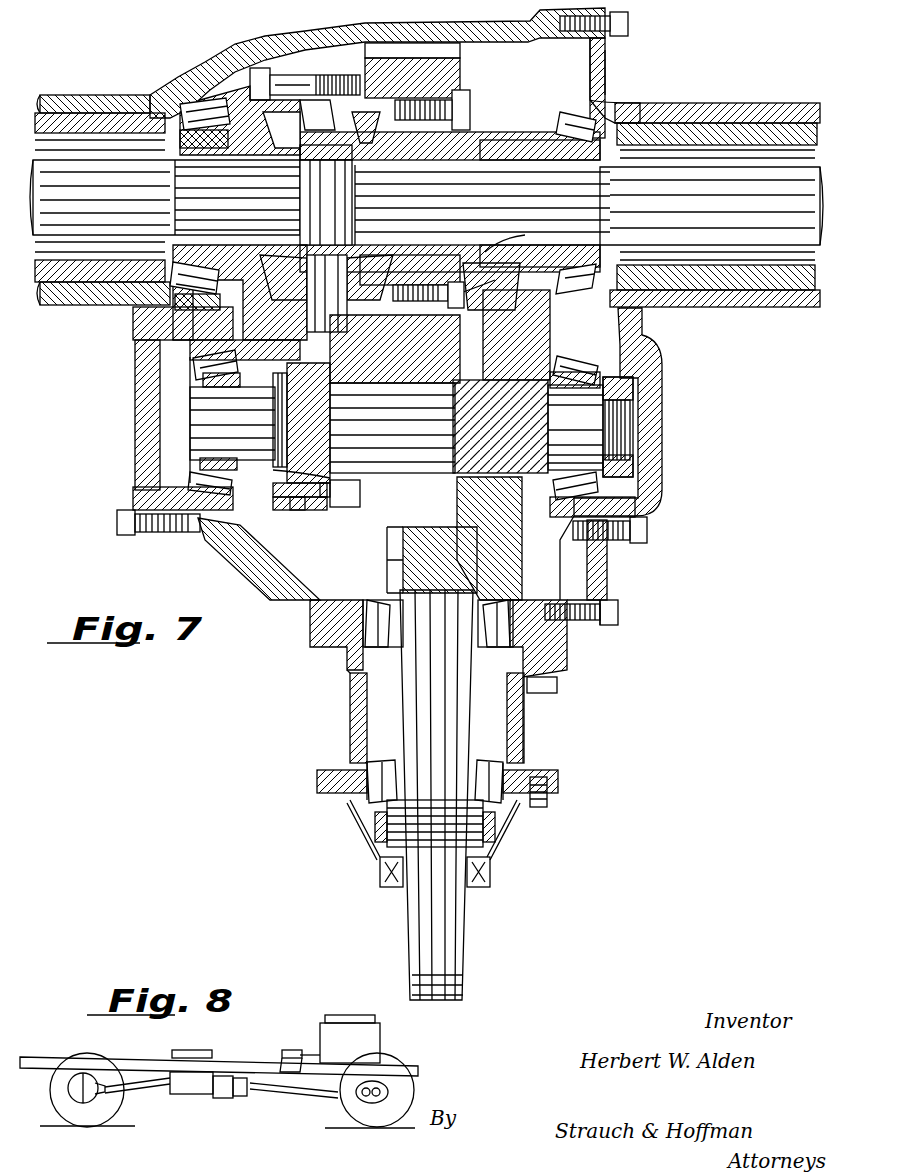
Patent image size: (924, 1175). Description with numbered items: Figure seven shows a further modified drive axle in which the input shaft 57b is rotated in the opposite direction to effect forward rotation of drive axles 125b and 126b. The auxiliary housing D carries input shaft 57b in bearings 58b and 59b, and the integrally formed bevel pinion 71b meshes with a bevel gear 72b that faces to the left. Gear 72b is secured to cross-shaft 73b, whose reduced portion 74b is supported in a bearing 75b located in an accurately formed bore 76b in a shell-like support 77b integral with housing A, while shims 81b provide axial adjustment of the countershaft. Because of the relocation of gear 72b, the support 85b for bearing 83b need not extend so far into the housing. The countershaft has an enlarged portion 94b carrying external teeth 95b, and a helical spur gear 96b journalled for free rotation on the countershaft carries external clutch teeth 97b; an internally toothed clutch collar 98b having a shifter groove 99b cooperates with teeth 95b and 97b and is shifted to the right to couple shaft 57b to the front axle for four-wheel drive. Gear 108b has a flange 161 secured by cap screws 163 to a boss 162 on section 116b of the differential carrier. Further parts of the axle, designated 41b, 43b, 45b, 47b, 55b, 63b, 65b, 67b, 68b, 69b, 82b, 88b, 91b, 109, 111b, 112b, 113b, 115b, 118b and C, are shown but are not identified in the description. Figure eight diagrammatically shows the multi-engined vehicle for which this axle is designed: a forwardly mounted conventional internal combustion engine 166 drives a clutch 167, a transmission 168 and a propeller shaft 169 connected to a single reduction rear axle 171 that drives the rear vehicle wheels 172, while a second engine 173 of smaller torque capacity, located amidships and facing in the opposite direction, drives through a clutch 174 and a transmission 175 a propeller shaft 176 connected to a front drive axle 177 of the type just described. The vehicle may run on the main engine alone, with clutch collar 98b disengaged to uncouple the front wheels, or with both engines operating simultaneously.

In FIG. 7, the axle housing 41b is at (70, 305).
In FIG. 7, the axle sleeve 47b is at (56, 240).
In FIG. 7, the drive axle 125b is at (131, 200).
In FIG. 7, the cover 118b is at (258, 60).
In FIG. 7, the bolt 109 is at (200, 80).
In FIG. 7, the differential bearing 111b is at (180, 95).
In FIG. 7, the gear 108b is at (460, 70).
In FIG. 7, the cap screws 163 is at (470, 105).
In FIG. 7, the housing wall 112b is at (590, 100).
In FIG. 7, the housing section C is at (610, 85).
In FIG. 7, the flange bolt 55b is at (628, 28).
In FIG. 7, the differential case 115b is at (385, 220).
In FIG. 7, the section of the differential carrier 116b is at (505, 140).
In FIG. 7, the differential bearing 113b is at (560, 128).
In FIG. 7, the flange 161 is at (488, 246).
In FIG. 7, the right axle housing 43b is at (688, 103).
In FIG. 7, the axle sleeve 45b is at (717, 206).
In FIG. 7, the drive axle 126b is at (765, 196).
In FIG. 7, the shell-like support 77b is at (205, 332).
In FIG. 7, the bore 76b is at (228, 332).
In FIG. 7, the shims 81b is at (140, 535).
In FIG. 7, the bearing 75b is at (192, 395).
In FIG. 7, the reduced portion 74b is at (235, 425).
In FIG. 7, the enlarged portion 94b is at (285, 490).
In FIG. 7, the boss 162 is at (378, 375).
In FIG. 7, the helical spur gear 96b is at (392, 462).
In FIG. 7, the cross-shaft 73b is at (515, 420).
In FIG. 7, the hub 82b is at (590, 418).
In FIG. 7, the bearing 83b is at (575, 440).
In FIG. 7, the nut 91b is at (635, 390).
In FIG. 7, the support 85b is at (563, 352).
In FIG. 7, the bolt 88b is at (648, 530).
In FIG. 7, the bevel gear 72b is at (512, 556).
In FIG. 7, the bevel pinion 71b is at (395, 570).
In FIG. 7, the external teeth 95b is at (280, 495).
In FIG. 7, the external clutch teeth 97b is at (340, 500).
In FIG. 7, the clutch collar 98b is at (318, 497).
In FIG. 7, the shifter groove 99b is at (297, 510).
In FIG. 7, the housing A is at (275, 588).
In FIG. 7, the bearing 59b is at (372, 606).
In FIG. 7, the auxiliary housing D is at (350, 733).
In FIG. 7, the input shaft 57b is at (424, 722).
In FIG. 7, the bolt 63b is at (540, 693).
In FIG. 7, the bearing 58b is at (405, 770).
In FIG. 7, the retainer 67b is at (548, 803).
In FIG. 7, the nut 65b is at (385, 822).
In FIG. 7, the dust shield 68b is at (540, 820).
In FIG. 7, the seal 69b is at (490, 880).
In FIG. 8, the rear vehicle wheels 172 is at (55, 1100).
In FIG. 8, the single reduction rear axle 171 is at (80, 1072).
In FIG. 8, the propeller shaft 169 is at (145, 1092).
In FIG. 8, the second engine 173 is at (190, 1095).
In FIG. 8, the clutch 174 is at (222, 1100).
In FIG. 8, the transmission 175 is at (247, 1088).
In FIG. 8, the propeller shaft 176 is at (310, 1097).
In FIG. 8, the front drive axle 177 is at (372, 1103).
In FIG. 8, the internal combustion engine 166 is at (380, 1041).
In FIG. 8, the transmission 168 is at (287, 1050).
In FIG. 8, the clutch 167 is at (310, 1050).